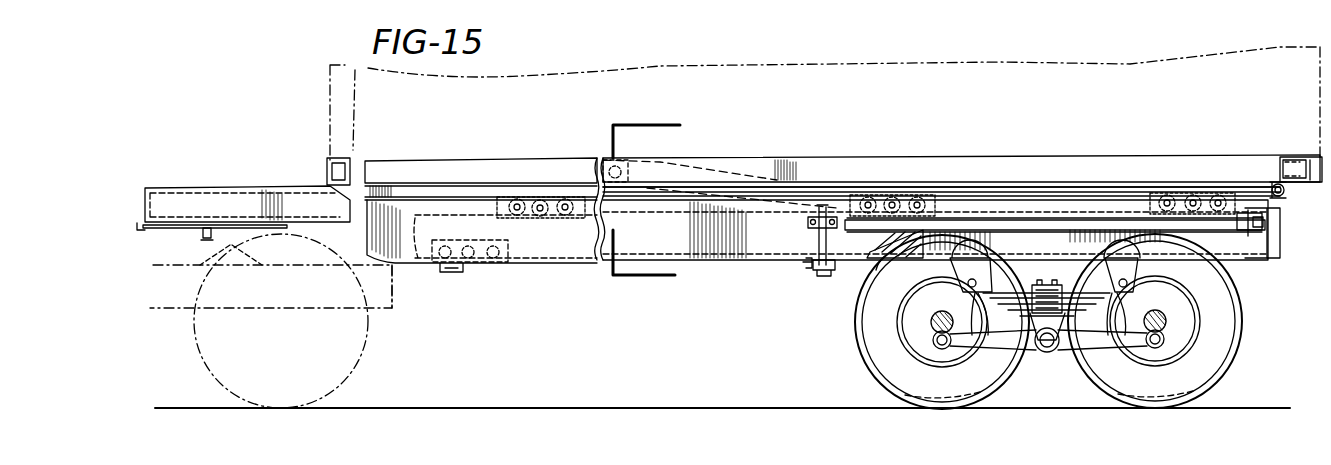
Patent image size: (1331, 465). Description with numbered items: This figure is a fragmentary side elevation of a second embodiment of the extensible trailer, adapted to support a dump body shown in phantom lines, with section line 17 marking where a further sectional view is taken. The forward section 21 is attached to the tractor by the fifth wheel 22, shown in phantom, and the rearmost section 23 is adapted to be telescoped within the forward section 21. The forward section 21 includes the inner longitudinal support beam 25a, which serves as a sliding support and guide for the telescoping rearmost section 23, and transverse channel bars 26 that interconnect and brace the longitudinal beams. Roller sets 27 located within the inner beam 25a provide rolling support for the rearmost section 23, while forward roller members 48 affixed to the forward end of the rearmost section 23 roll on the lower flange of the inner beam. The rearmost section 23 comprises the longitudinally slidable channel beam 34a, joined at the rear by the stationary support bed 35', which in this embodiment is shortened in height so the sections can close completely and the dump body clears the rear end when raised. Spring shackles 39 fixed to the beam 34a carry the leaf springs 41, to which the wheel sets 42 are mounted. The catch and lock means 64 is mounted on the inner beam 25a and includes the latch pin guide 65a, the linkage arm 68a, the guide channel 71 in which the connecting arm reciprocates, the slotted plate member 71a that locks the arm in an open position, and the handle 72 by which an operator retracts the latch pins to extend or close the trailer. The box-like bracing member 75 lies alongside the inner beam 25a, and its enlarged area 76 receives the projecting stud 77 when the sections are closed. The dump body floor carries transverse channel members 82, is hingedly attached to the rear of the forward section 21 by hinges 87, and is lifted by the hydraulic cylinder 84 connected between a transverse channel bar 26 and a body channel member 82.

The section line 17- 17 is at (652, 199).
The forward section 21 is at (740, 266).
The fifth wheel 22 is at (285, 233).
The rearmost section 23 is at (888, 266).
The inner longitudinal support beam 25a is at (680, 244).
The transverse channel bar 26 is at (946, 180).
The roller set 27 is at (535, 198).
The longitudinally slidable channel beam 34a is at (1245, 260).
The stationary support bed 35' is at (1281, 233).
The spring shackle 39 is at (955, 268).
The leaf spring 41 is at (1040, 290).
The wheel set 42 is at (872, 352).
The forward roller member 48 is at (482, 265).
The catch and lock means 64 is at (823, 275).
The latch pin guide 65a is at (808, 230).
The linkage arm 68a is at (830, 243).
The guide channel 71 is at (836, 262).
The slotted plate member 71a is at (826, 272).
The handle 72 is at (810, 266).
The box-like bracing member 75 is at (1048, 220).
The enlarged area 76 is at (1245, 224).
The projecting stud 77 is at (1266, 242).
The transverse channel member 82 is at (326, 165).
The hydraulic cylinder 84 is at (673, 166).
The hinge 87 is at (1285, 194).